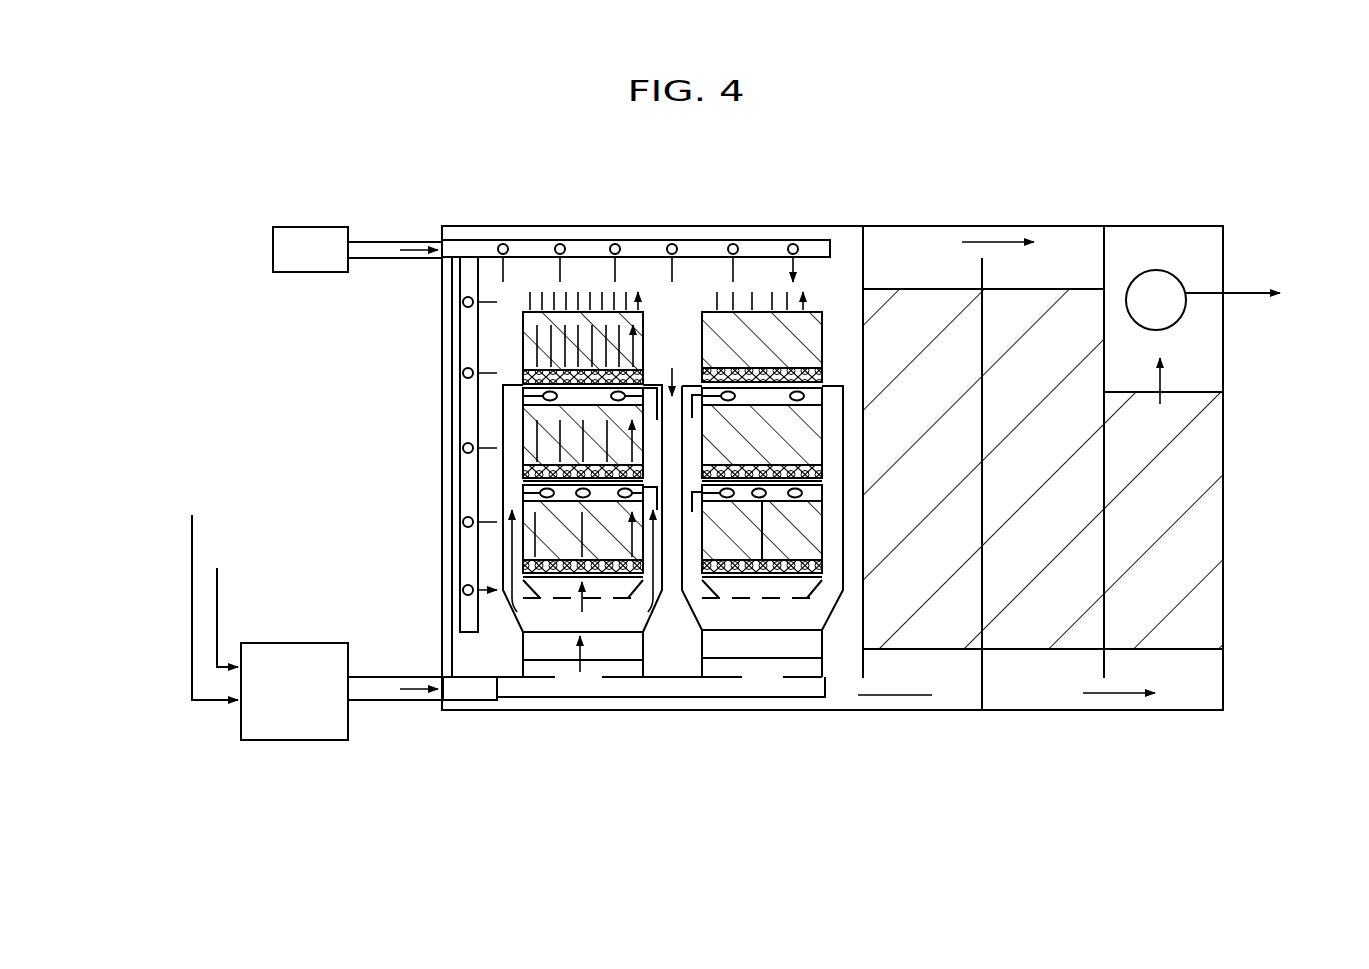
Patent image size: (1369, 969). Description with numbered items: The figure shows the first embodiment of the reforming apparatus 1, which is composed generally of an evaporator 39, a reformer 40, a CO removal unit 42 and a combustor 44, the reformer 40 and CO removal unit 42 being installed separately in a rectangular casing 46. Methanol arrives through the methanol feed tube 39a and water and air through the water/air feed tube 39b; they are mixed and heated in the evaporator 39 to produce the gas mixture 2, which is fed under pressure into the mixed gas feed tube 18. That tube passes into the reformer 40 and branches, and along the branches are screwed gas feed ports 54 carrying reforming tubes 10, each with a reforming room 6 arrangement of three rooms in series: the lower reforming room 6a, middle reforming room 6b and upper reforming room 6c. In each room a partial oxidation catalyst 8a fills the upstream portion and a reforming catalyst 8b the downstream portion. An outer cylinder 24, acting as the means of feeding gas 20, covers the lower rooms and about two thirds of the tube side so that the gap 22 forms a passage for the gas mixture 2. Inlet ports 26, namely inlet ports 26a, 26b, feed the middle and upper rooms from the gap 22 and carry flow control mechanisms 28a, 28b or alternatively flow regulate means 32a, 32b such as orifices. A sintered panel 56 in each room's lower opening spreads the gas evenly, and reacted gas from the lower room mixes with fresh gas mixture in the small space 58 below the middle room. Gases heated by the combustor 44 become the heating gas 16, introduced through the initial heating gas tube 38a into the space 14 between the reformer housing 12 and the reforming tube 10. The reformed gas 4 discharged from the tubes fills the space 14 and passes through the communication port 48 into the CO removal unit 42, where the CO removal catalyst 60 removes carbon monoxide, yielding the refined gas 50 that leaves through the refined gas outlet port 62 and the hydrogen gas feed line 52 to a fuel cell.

The reforming apparatus 1 is at (282, 136).
The gas mixture 2 is at (410, 678).
The reformed gas 4 is at (411, 444).
The reforming room 6 is at (805, 484).
The lower reforming room 6a is at (804, 539).
The middle reforming room 6b is at (815, 448).
The upper reforming room 6c is at (815, 322).
The partial oxidation catalyst 8a is at (780, 560).
The reforming catalyst 8b is at (742, 560).
The reforming tube 10 is at (438, 312).
The reformer housing 12 is at (636, 223).
The space 14 is at (837, 266).
The heating gas 16 is at (411, 250).
The mixed gas feed tube 18 is at (690, 698).
The means of feeding gas 20 is at (657, 605).
The gap 22 is at (848, 430).
The outer cylinder 24 is at (672, 523).
The inlet ports 26 is at (220, 375).
The inlet port 26a is at (547, 493).
The inlet port 26b is at (553, 396).
The flow control mechanism 28a is at (583, 493).
The flow control mechanism 28b is at (583, 396).
The flow regulate means 32a is at (583, 493).
The flow regulate means 32b is at (583, 396).
The initial heating gas tube 38a is at (523, 242).
The evaporator 39 is at (300, 741).
The methanol feed tube 39a is at (219, 625).
The water/air feed tube 39b is at (192, 706).
The reformer 40 is at (443, 765).
The CO removal unit 42 is at (872, 762).
The combustor 44 is at (304, 232).
The casing 46 is at (921, 226).
The communication port 48 is at (852, 698).
The refined gas 50 is at (1163, 381).
The hydrogen gas feed line 52 is at (1256, 291).
The gas feed port 54 is at (592, 700).
The sintered panel 56 is at (512, 603).
The small space 58 is at (812, 492).
The CO removal catalyst 60 is at (1190, 587).
The refined gas outlet port 62 is at (1170, 276).